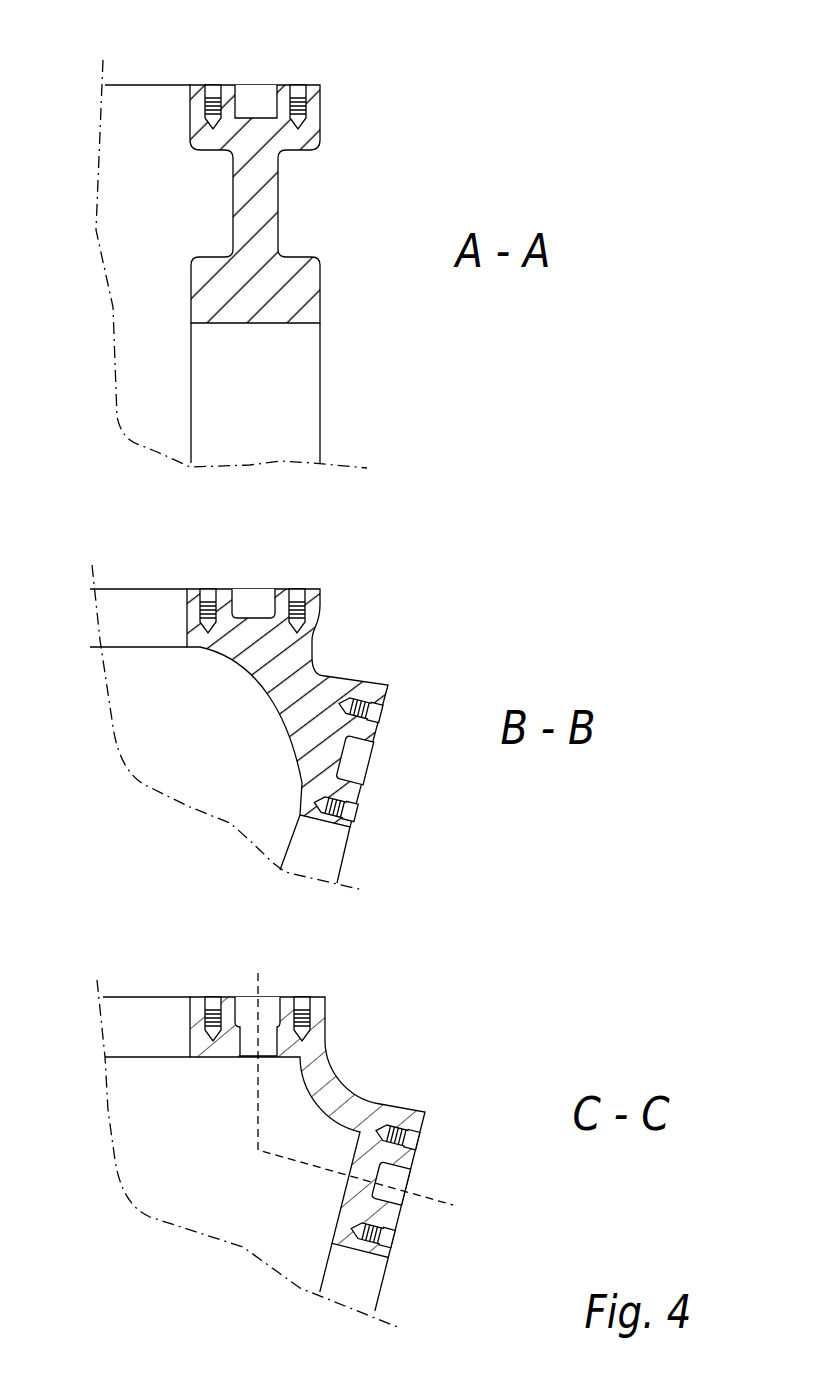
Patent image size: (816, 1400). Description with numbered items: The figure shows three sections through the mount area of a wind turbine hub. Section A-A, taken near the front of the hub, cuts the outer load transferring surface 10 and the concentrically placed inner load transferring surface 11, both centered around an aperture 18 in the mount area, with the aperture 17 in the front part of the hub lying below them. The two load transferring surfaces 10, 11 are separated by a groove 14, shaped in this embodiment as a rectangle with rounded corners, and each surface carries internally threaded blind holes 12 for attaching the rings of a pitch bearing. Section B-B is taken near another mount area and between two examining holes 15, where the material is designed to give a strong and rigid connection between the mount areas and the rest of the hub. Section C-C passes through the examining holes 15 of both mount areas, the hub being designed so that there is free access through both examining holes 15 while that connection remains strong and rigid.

The outer load transferring surface 10 is at (312, 85).
The inner load transferring surface 11 is at (198, 85).
The internally threaded blind hole 12 is at (307, 112).
The groove 14 is at (257, 103).
The examining hole 15 is at (362, 1187).
The aperture 17 is at (277, 397).
The aperture 18 is at (130, 100).